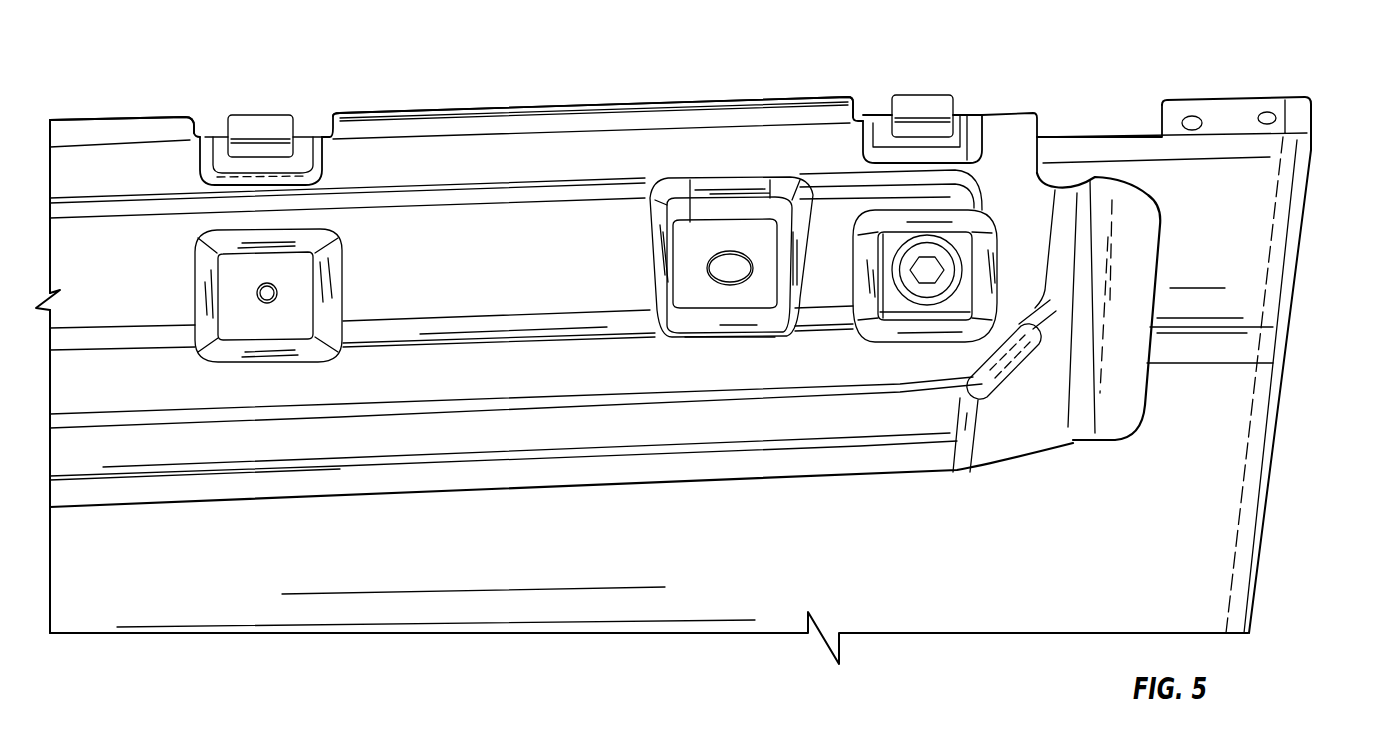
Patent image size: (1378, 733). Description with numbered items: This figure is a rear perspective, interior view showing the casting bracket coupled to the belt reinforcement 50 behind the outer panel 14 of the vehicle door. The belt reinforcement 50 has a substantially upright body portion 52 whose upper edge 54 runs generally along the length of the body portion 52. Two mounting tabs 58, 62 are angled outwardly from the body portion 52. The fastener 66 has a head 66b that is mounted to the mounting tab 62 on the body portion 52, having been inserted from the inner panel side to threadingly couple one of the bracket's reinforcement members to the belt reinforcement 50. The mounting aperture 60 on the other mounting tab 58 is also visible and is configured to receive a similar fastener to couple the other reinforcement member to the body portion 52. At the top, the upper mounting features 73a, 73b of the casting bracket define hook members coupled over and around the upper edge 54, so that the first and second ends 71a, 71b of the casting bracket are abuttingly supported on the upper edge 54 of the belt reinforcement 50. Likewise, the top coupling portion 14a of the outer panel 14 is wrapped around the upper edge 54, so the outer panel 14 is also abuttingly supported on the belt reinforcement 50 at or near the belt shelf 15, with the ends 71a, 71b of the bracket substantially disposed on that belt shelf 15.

The outer panel 14 is at (1275, 242).
The top coupling portion 14a is at (95, 125).
The belt shelf 15 is at (756, 93).
The belt reinforcement 50 is at (1127, 413).
The body portion 52 is at (503, 377).
The upper edge 54 is at (314, 133).
The mounting tab 58 is at (306, 344).
The mounting aperture 60 is at (278, 285).
The mounting tab 62 is at (980, 347).
The fastener 66 is at (1015, 359).
The head 66b is at (928, 286).
The first end 71a is at (945, 81).
The second end 71b is at (262, 84).
The upper mounting feature 73a is at (942, 103).
The upper mounting feature 73b is at (246, 108).